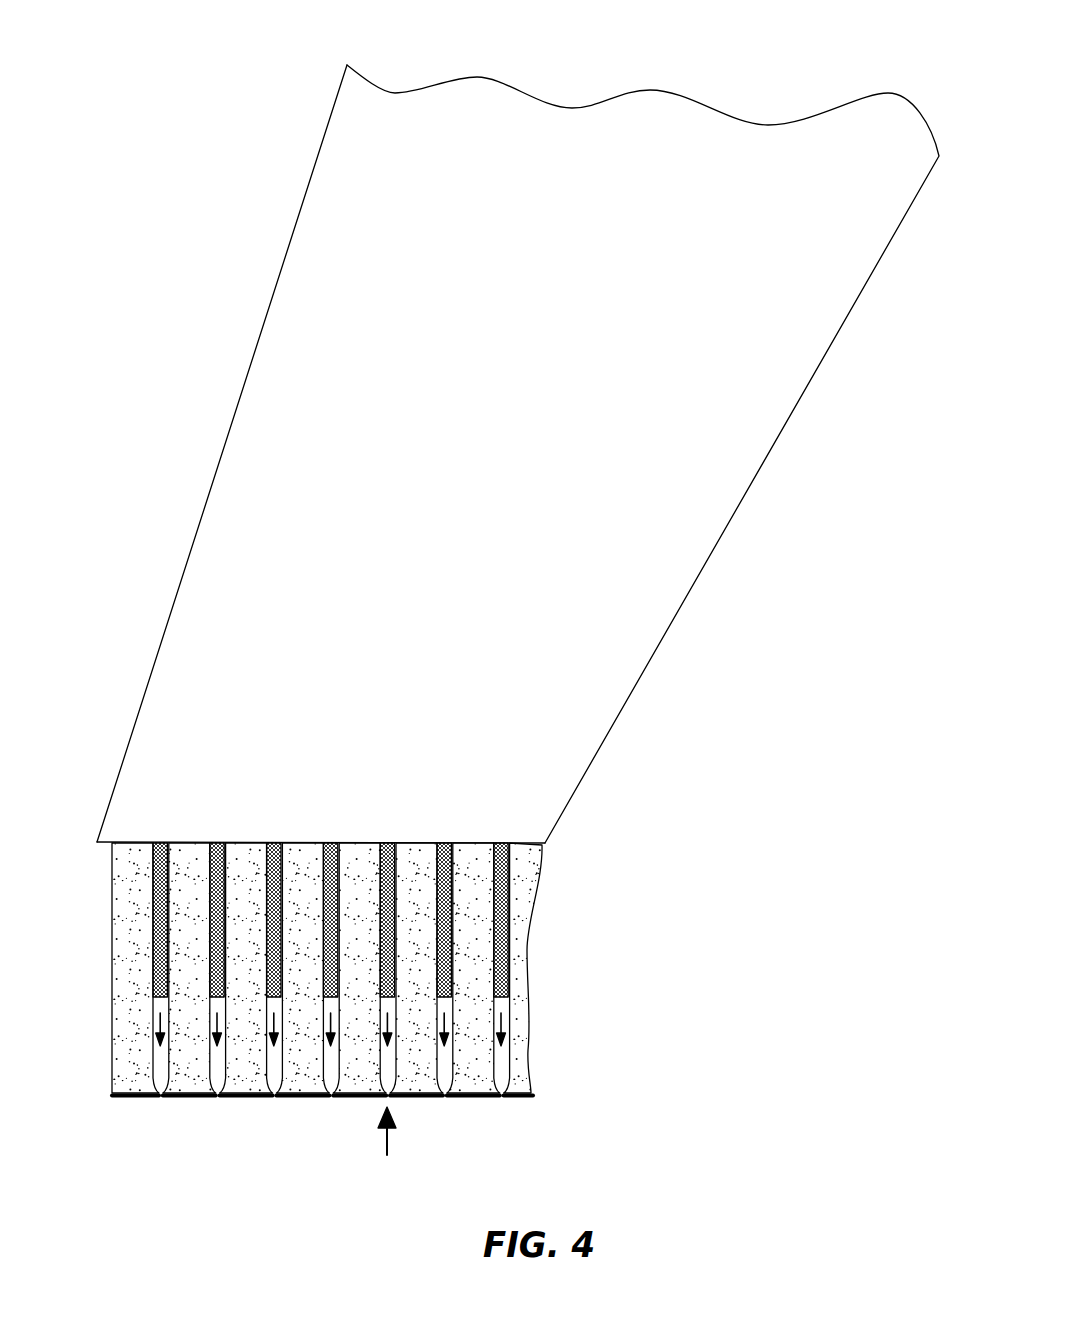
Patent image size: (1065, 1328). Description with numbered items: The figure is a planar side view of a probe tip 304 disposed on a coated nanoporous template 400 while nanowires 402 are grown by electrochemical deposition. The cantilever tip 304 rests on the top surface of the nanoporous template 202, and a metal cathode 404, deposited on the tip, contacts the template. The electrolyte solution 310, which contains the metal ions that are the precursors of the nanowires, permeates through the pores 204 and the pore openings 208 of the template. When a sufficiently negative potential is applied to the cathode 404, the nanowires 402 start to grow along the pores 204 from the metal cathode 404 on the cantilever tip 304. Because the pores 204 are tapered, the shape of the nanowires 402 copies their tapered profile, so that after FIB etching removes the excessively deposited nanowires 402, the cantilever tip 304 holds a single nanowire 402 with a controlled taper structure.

The coated nanoporous template 400 is at (184, 83).
The nanoporous template 202 is at (110, 884).
The pores 204 is at (504, 1060).
The pore openings 208 is at (383, 1151).
The probe tip 304 is at (272, 292).
The electrolyte solution 310 is at (840, 648).
The nanowires 402 is at (507, 903).
The metal cathode 404 is at (417, 847).